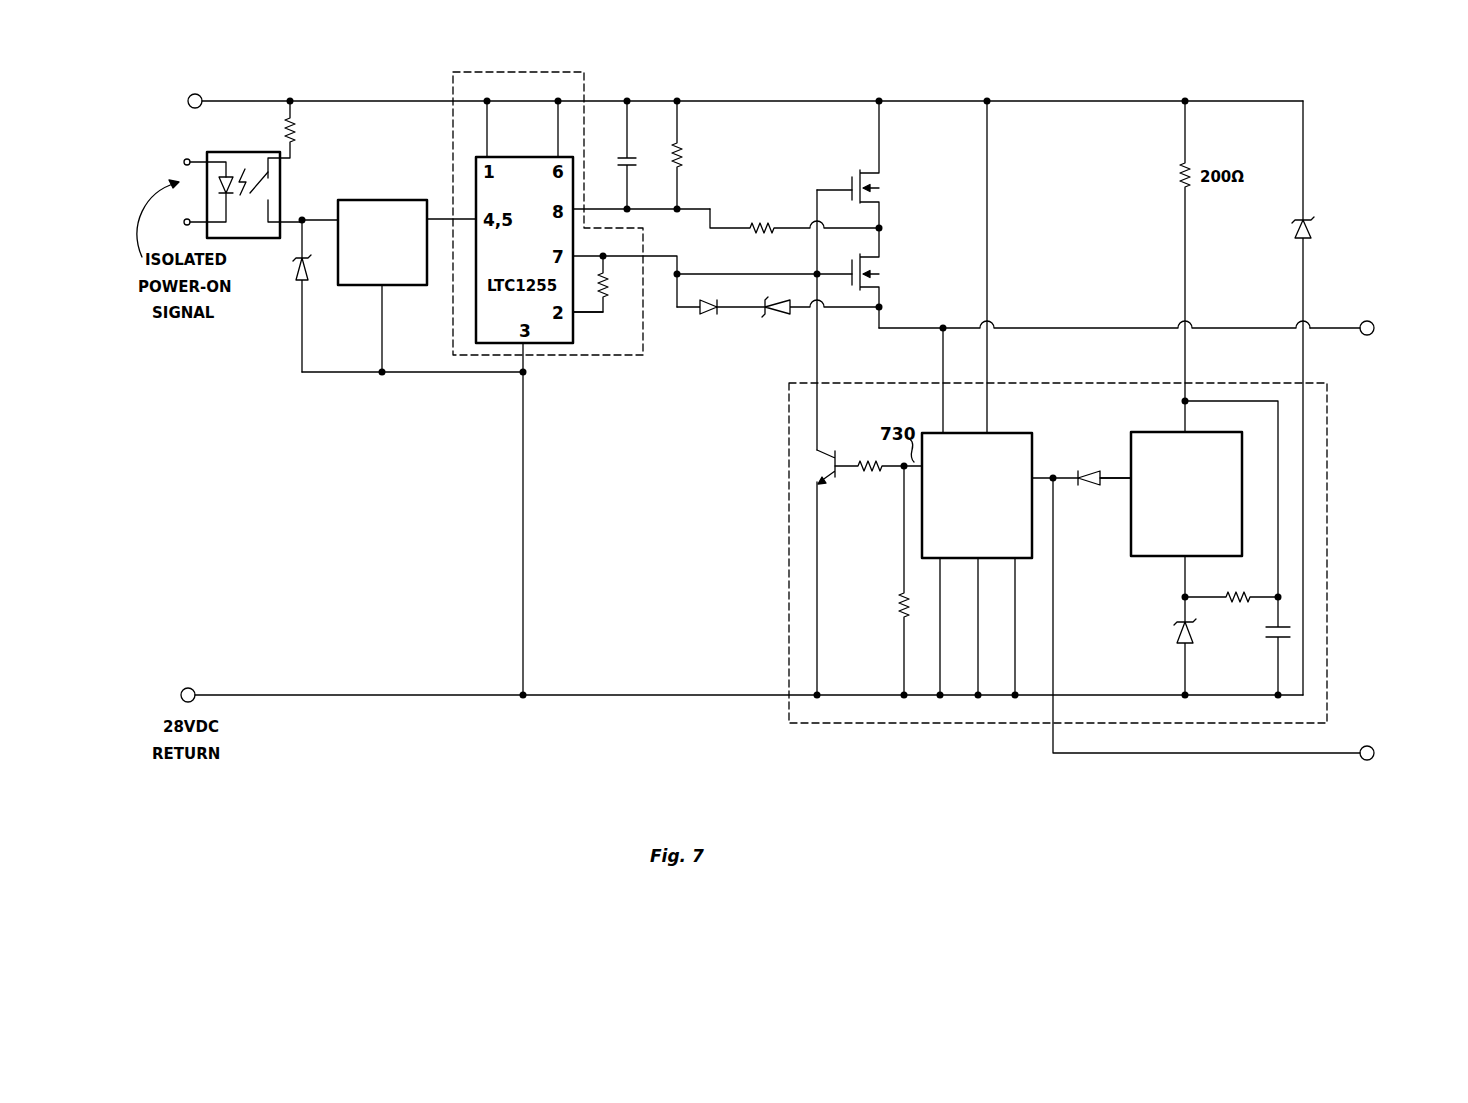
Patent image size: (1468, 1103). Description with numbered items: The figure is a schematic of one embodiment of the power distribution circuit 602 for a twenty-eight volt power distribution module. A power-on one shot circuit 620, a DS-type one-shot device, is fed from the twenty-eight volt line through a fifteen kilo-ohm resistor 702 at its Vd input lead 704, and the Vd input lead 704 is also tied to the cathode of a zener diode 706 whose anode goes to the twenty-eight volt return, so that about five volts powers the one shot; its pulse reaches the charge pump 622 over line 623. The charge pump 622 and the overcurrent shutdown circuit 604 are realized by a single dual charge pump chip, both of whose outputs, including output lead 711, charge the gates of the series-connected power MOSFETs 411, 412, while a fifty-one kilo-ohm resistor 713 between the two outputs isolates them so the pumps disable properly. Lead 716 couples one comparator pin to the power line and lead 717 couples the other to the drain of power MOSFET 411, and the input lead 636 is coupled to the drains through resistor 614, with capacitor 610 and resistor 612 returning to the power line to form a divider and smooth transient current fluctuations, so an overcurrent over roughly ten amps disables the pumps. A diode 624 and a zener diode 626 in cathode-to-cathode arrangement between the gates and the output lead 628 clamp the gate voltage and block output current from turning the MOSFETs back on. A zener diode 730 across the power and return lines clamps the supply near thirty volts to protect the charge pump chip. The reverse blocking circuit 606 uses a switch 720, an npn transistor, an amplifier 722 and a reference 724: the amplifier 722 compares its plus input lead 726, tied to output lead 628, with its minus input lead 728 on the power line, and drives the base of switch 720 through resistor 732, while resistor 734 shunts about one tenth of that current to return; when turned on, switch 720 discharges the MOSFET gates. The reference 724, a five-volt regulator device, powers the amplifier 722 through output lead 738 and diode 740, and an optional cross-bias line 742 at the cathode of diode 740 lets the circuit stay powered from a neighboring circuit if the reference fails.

The power distribution circuit 602 is at (1138, 91).
The resistor 702 is at (296, 128).
The Vd input lead 704 is at (318, 217).
The zener diode 706 is at (308, 283).
The power-on one shot circuit 620 is at (396, 286).
The line 623 is at (440, 218).
The lead 716 is at (556, 150).
The overcurrent shutdown circuit 604 is at (584, 88).
The charge pump 622 is at (573, 206).
The capacitor 610 is at (626, 155).
The resistor 612 is at (683, 138).
The lead 717 is at (627, 208).
The input lead 636 is at (676, 208).
The resistor 614 is at (758, 230).
The resistor 713 is at (604, 310).
The output lead 711 is at (588, 314).
The diode 624 is at (713, 316).
The zener diode 626 is at (785, 318).
The first power MOSFET 411 is at (880, 199).
The second power MOSFET 412 is at (878, 274).
The output lead 628 is at (1322, 328).
The zener diode 730 is at (1306, 240).
The reverse blocking circuit 606 is at (1327, 492).
The plus input lead 726 is at (940, 422).
The minus input lead 728 is at (990, 396).
The resistor 732 is at (866, 458).
The switch 720 is at (837, 486).
The resistor 734 is at (898, 622).
The amplifier 722 is at (1034, 442).
The diode 740 is at (1092, 470).
The output lead 738 is at (1115, 480).
The reference 724 is at (1158, 558).
The cross-bias line 742 is at (1050, 747).